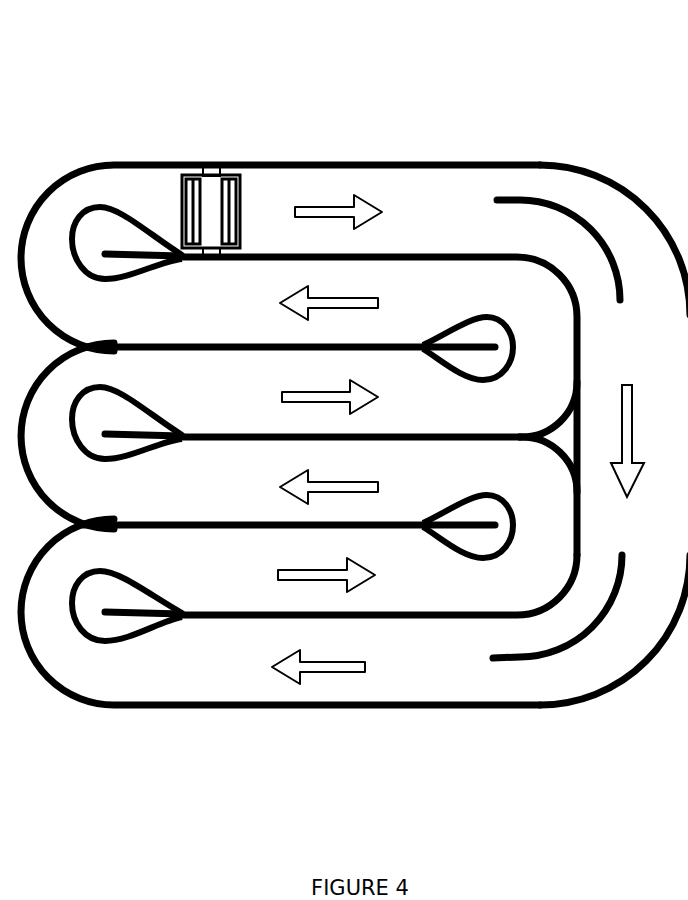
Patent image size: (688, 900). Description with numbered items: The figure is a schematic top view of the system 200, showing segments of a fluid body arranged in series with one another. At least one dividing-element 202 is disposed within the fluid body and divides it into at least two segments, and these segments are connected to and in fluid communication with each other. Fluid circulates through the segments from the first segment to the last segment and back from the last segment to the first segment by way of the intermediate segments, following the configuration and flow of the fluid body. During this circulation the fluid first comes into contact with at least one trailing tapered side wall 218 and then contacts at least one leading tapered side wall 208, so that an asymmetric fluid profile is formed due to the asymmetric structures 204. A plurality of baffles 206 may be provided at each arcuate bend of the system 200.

The system 200 is at (354, 355).
The dividing-element 202 is at (428, 605).
The asymmetric structure 204 is at (105, 207).
The baffle 206 is at (603, 212).
The leading tapered side wall 208 is at (113, 637).
The trailing tapered side wall 218 is at (138, 217).